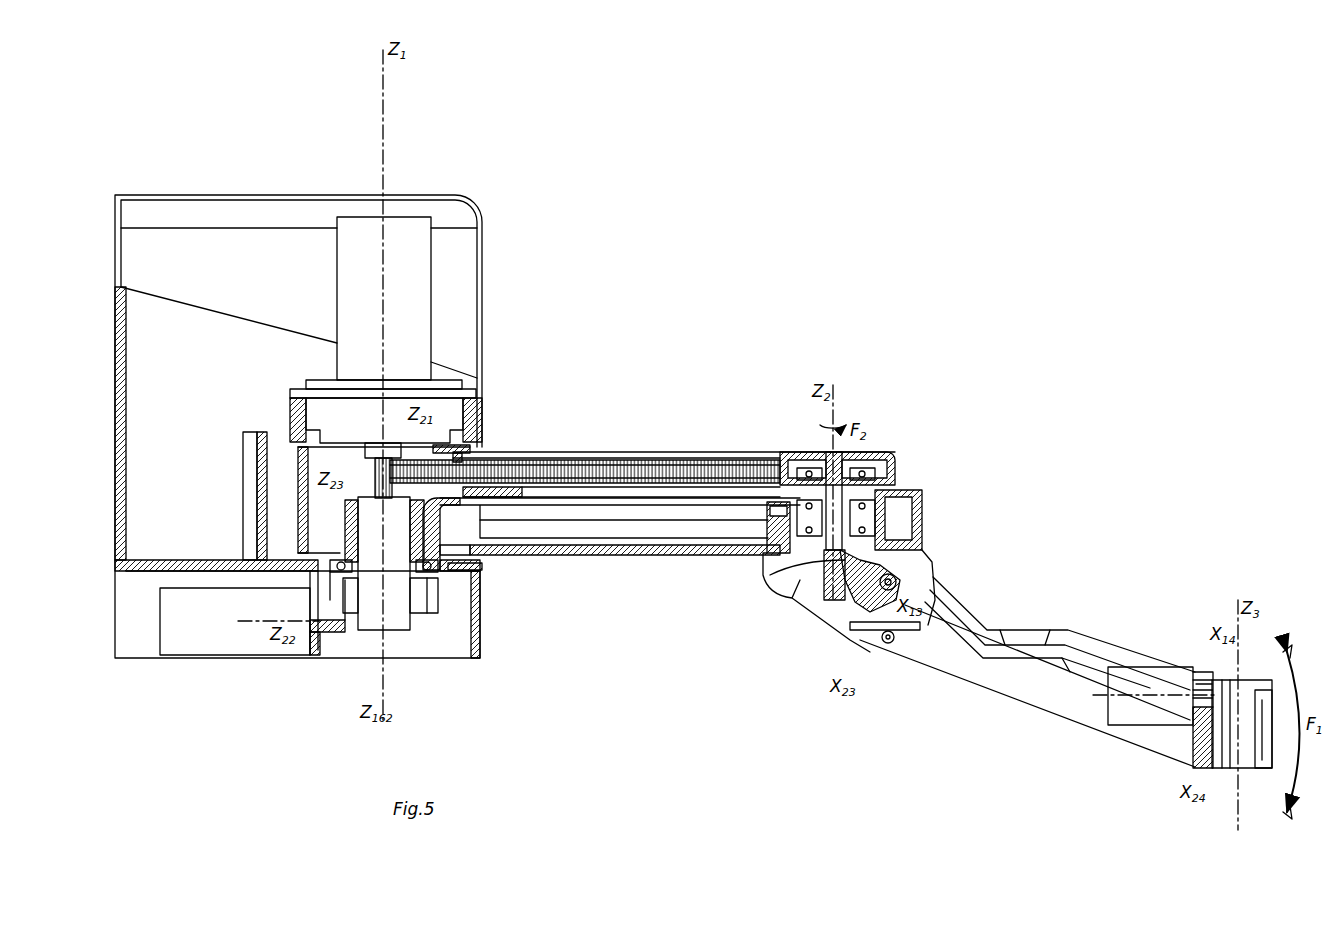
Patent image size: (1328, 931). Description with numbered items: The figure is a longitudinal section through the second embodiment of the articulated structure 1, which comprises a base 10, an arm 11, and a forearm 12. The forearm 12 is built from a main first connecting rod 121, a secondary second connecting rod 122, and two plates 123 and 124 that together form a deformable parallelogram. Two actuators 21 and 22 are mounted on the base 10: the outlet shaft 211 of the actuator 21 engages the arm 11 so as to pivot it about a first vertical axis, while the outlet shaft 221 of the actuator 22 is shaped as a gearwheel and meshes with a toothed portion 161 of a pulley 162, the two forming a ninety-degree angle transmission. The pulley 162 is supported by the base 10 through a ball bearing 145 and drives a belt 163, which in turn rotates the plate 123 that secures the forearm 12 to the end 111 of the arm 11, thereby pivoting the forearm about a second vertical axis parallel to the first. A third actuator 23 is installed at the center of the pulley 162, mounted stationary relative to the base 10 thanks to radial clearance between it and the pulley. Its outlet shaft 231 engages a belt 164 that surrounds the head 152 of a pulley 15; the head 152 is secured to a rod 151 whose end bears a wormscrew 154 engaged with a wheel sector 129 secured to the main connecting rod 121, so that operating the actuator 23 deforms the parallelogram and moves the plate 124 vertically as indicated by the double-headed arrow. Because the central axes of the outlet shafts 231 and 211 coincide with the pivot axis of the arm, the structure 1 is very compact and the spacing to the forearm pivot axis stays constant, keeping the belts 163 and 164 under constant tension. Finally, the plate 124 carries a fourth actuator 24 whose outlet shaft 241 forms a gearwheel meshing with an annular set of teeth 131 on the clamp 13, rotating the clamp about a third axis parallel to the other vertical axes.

The structure 1 is at (775, 247).
The base 10 is at (116, 440).
The actuator 21 is at (410, 266).
The outlet shaft 211 is at (452, 437).
The outlet shaft 231 is at (375, 465).
The belt 164 is at (668, 462).
The arm 11 is at (580, 555).
The belt 163 is at (630, 520).
The third actuator 23 is at (368, 632).
The pulley 162 is at (400, 590).
The toothed portion 161 is at (433, 615).
The ball bearing 145 is at (340, 558).
The actuator 22 is at (196, 640).
The outlet shaft 221 is at (335, 636).
The pulley 15 is at (900, 453).
The head 152 is at (895, 478).
The rod 151 is at (778, 511).
The end 111 is at (922, 518).
The plate 123 is at (770, 558).
The wormscrew 154 is at (800, 592).
The wheel sector 129 is at (870, 622).
The forearm 12 is at (990, 706).
The main first connecting rod 121 is at (1030, 632).
The secondary second connecting rod 122 is at (1063, 705).
The fourth actuator 24 is at (1154, 696).
The plate 124 is at (1195, 742).
The outlet shaft 241 is at (1204, 680).
The clamp 13 is at (1258, 680).
The annular set of teeth 131 is at (1275, 700).